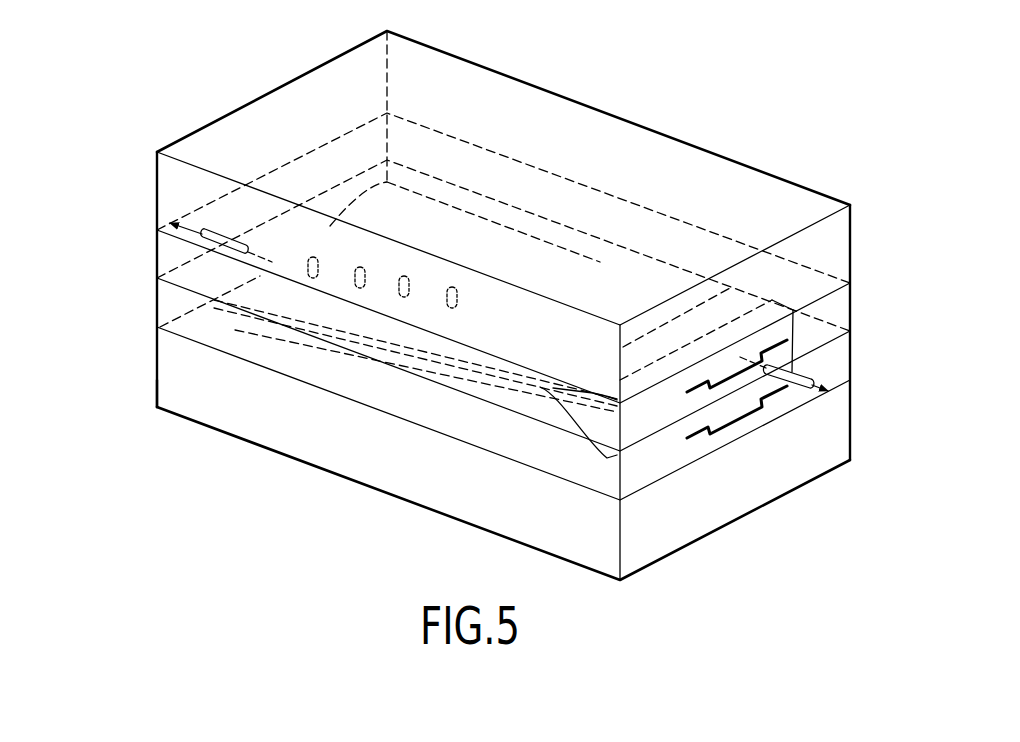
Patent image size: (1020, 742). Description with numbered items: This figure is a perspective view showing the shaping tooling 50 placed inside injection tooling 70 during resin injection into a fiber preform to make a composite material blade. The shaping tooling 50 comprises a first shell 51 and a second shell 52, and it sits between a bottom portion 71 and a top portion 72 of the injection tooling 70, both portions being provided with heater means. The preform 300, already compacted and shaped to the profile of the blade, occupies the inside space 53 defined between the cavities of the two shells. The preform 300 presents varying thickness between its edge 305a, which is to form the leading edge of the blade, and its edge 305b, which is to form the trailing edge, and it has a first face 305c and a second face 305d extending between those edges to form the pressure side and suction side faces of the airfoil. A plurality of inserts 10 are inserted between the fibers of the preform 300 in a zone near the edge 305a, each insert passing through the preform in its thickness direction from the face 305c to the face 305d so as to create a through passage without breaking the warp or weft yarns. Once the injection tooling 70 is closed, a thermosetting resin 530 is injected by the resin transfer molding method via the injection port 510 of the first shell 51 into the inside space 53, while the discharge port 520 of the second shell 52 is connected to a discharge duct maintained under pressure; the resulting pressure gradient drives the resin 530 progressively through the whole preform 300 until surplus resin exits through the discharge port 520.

The inserts 10 is at (314, 257).
The shaping tooling 50 is at (363, 537).
The first shell 51 is at (417, 403).
The second shell 52 is at (343, 333).
The inside space 53 is at (522, 398).
The injection tooling 70 is at (105, 183).
The bottom portion 71 is at (163, 368).
The top portion 72 is at (165, 182).
The preform 300 is at (594, 262).
The edge 305a is at (293, 303).
The edge 305b is at (558, 222).
The first face 305c is at (472, 363).
The second face 305d is at (637, 290).
The injection port 510 is at (791, 380).
The discharge port 520 is at (227, 235).
The resin 530 is at (835, 402).